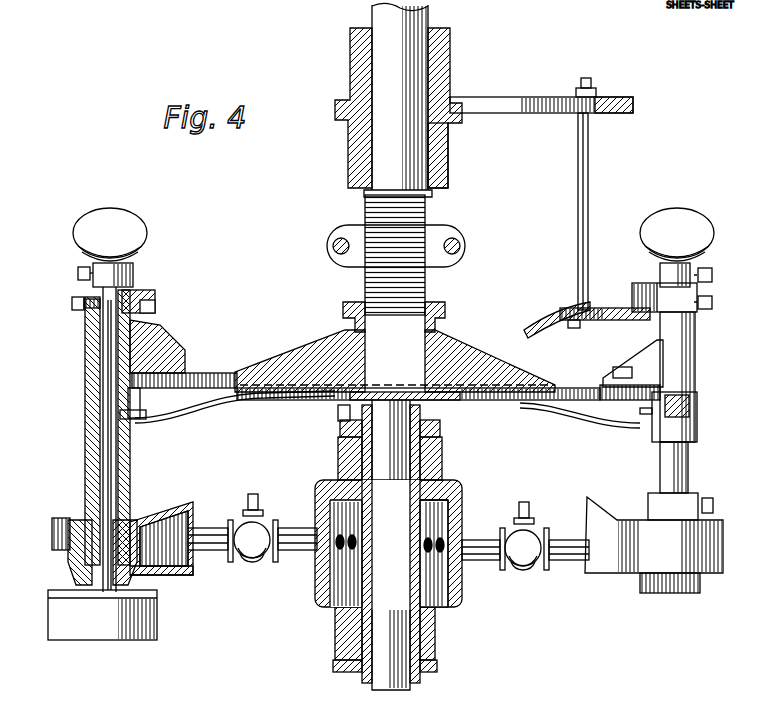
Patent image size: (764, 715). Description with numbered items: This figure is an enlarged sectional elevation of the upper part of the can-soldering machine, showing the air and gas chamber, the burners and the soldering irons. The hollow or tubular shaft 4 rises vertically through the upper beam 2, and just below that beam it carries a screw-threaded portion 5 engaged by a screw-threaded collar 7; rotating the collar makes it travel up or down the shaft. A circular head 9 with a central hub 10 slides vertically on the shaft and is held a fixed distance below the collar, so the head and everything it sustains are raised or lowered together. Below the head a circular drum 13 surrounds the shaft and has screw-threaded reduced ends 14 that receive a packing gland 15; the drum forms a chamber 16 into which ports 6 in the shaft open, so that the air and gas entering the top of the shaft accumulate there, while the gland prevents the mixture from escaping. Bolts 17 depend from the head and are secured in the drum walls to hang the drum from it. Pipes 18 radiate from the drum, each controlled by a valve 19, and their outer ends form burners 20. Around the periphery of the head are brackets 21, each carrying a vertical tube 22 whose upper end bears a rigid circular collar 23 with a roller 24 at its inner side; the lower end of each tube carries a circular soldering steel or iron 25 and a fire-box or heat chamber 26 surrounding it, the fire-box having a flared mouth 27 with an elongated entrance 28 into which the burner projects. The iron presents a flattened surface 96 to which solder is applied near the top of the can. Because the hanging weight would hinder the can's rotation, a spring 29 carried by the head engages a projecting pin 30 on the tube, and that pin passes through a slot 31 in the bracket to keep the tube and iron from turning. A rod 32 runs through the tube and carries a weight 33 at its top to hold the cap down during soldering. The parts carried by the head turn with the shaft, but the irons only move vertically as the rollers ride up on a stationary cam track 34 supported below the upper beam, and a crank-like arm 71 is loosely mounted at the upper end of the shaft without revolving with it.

The upper beam 2 is at (362, 55).
The hollow or tubular shaft 4 is at (405, 22).
The screw-threaded portion 5 is at (428, 293).
The ports 6 is at (320, 582).
The screw-threaded collar 7 is at (440, 240).
The circular head 9 is at (490, 356).
The central hub 10 is at (352, 330).
The circular drum 13 is at (463, 497).
The reduced ends 14 is at (442, 466).
The packing gland 15 is at (440, 432).
The chamber 16 is at (440, 590).
The bolts 17 is at (346, 432).
The pipes 18 is at (294, 528).
The valve 19 is at (254, 550).
The burners 20 is at (186, 530).
The brackets 21 is at (150, 356).
The vertical tube 22 is at (92, 441).
The circular collar 23 is at (75, 300).
The roller 24 is at (150, 296).
The soldering steel or iron 25 is at (142, 588).
The fire-box or heat chamber 26 is at (52, 530).
The flared mouth 27 is at (186, 509).
The elongated entrance 28 is at (182, 556).
The spring 29 is at (207, 412).
The projecting pin 30 is at (134, 420).
The slot 31 is at (134, 405).
The rod 32 is at (106, 470).
The weight 33 is at (393, 247).
The cam track 34 is at (540, 322).
The crank-like arms 71 is at (442, 166).
The flattened surface 96 is at (70, 569).